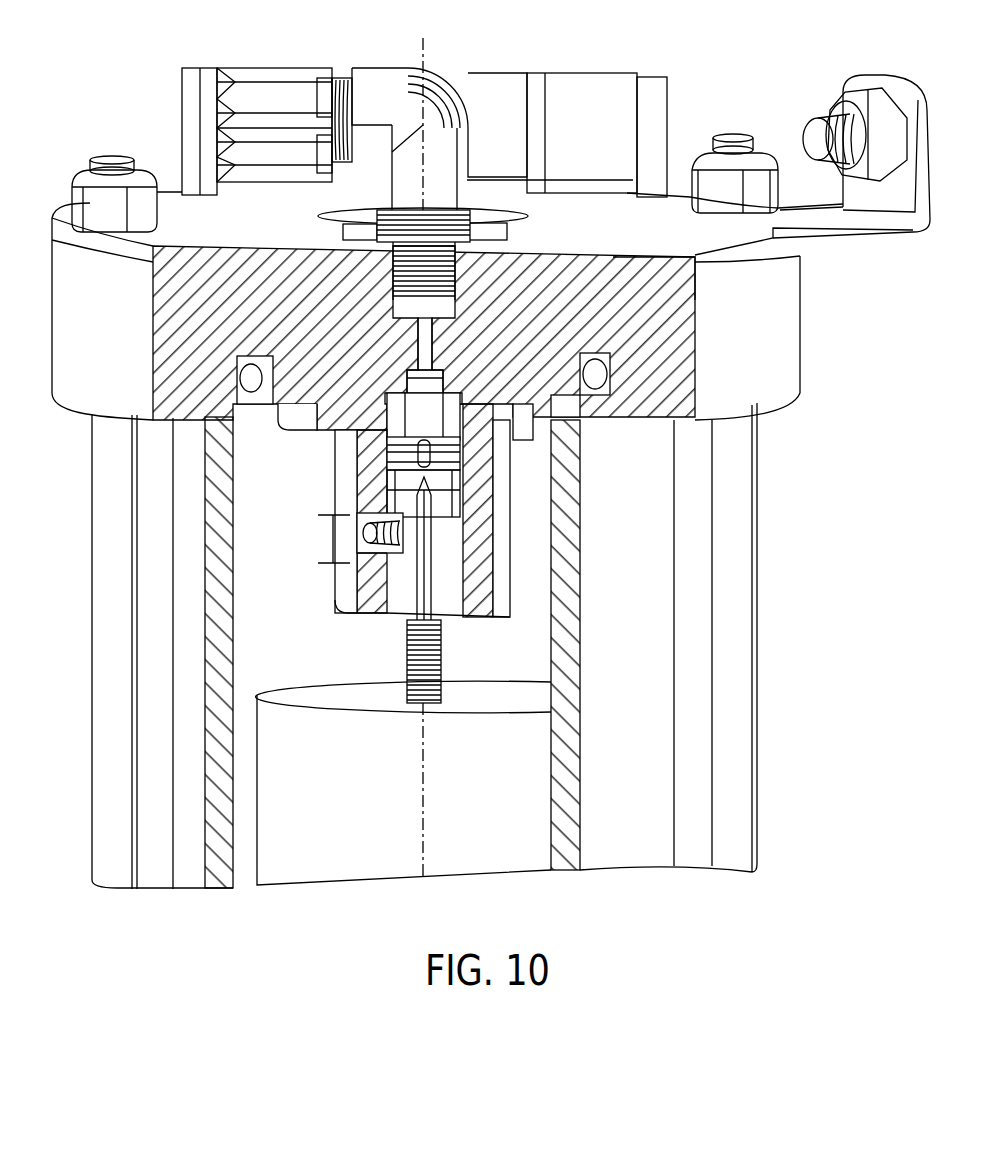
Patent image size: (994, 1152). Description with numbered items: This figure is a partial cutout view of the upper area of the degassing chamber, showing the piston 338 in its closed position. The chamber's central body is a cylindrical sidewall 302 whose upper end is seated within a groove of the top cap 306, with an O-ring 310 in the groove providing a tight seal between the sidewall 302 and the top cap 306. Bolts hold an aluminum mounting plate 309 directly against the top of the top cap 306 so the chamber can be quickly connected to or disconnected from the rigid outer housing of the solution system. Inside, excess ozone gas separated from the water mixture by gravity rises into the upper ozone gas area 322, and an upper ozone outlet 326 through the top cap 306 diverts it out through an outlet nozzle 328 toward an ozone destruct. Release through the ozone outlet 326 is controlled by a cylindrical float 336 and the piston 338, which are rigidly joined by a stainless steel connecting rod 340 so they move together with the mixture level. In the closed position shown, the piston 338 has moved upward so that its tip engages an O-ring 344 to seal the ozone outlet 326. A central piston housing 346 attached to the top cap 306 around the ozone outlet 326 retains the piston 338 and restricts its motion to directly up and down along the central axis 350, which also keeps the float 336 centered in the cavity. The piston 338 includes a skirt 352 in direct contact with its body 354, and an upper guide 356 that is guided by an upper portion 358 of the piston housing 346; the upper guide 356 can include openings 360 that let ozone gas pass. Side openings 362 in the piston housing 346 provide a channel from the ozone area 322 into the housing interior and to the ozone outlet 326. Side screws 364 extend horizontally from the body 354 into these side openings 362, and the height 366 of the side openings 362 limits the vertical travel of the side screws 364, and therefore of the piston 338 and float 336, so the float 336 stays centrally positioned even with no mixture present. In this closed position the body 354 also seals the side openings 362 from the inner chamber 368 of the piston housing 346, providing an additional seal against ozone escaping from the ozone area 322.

The cylindrical sidewall 302 is at (648, 684).
The top cap 306 is at (780, 356).
The mounting plate 309 is at (177, 210).
The O-ring 310 is at (247, 382).
The upper ozone gas area 322 is at (268, 485).
The upper ozone outlet 326 is at (437, 337).
The outlet nozzle 328 is at (388, 100).
The cylindrical float 336 is at (530, 793).
The piston 338 is at (450, 487).
The connecting rod 340 is at (447, 665).
The O-ring 344 is at (452, 415).
The central piston housing 346 is at (367, 473).
The central axis 350 is at (428, 52).
The skirt 352 is at (367, 605).
The body 354 is at (447, 593).
The upper guide 356 is at (360, 430).
The upper portion 358 is at (487, 455).
The openings 360 is at (500, 428).
The side openings 362 is at (363, 560).
The side screws 364 is at (360, 512).
The height 366 is at (327, 540).
The inner chamber 368 is at (472, 422).